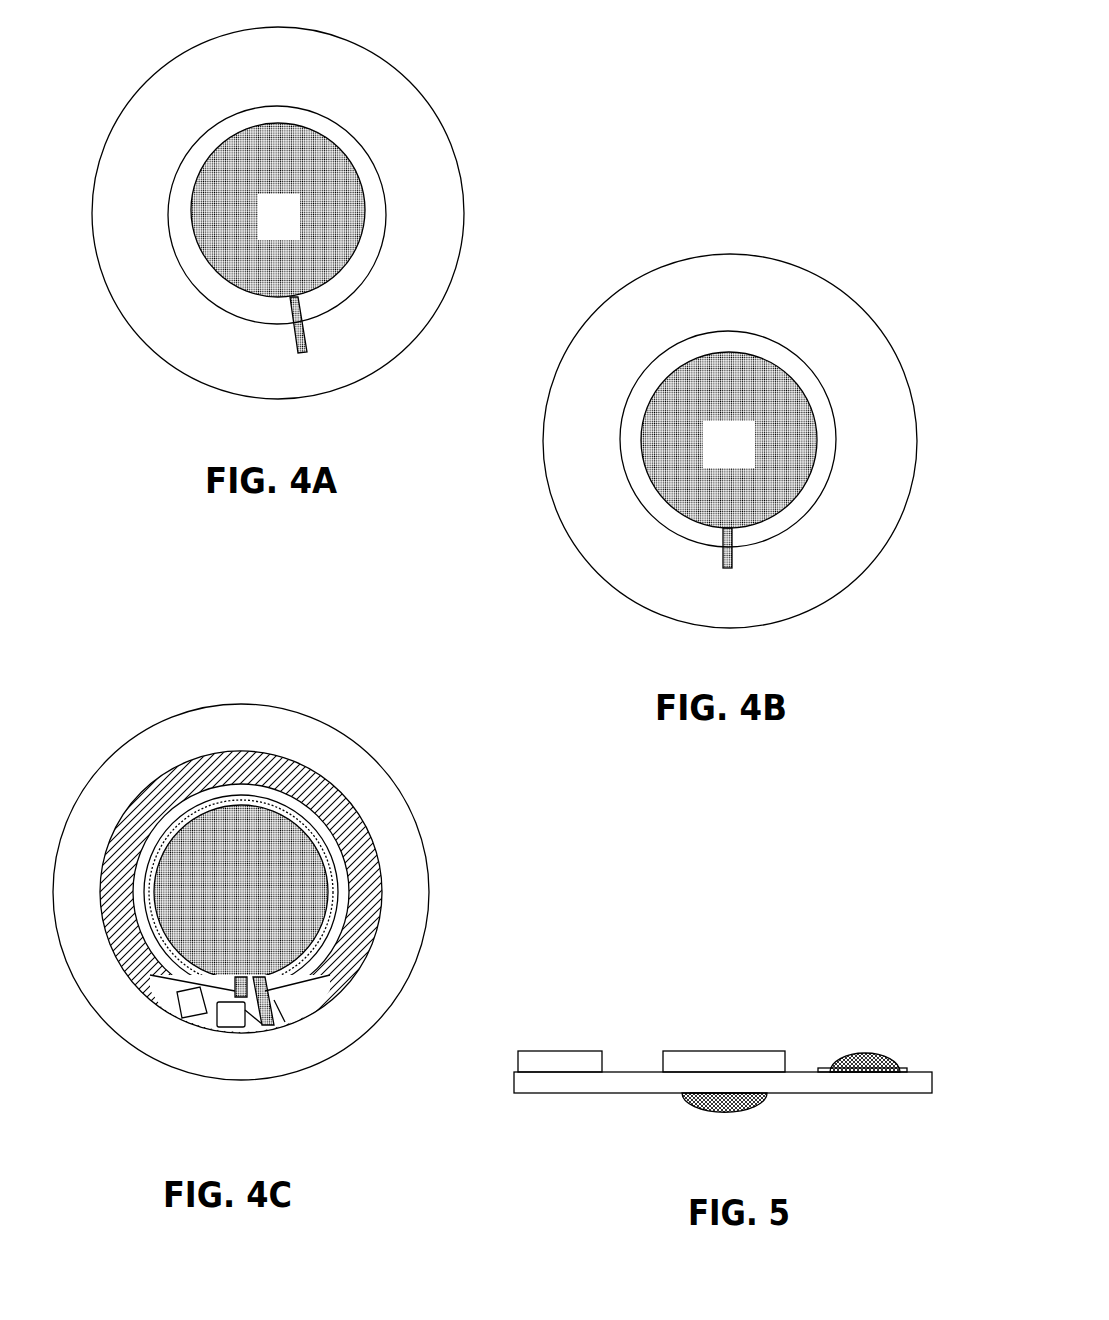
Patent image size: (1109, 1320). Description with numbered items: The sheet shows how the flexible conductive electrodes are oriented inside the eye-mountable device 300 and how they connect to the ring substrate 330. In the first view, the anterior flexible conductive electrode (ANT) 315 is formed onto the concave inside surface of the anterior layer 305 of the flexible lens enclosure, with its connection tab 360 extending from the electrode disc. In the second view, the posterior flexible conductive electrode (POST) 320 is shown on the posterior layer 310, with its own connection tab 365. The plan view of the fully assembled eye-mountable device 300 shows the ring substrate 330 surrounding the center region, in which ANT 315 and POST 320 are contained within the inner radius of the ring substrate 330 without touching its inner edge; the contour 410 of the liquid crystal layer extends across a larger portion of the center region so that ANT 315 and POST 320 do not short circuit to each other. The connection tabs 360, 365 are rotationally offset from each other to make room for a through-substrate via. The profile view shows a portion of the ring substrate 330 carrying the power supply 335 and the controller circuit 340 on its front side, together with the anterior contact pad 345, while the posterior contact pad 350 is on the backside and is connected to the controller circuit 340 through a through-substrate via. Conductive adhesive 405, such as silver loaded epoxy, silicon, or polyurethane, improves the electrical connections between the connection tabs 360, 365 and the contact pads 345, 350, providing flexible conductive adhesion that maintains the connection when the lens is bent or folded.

In FIG. 4C, the eye-mountable device 300 is at (140, 650).
In FIG. 4A, the anterior layer 305 is at (341, 47).
In FIG. 4B, the posterior layer 310 is at (612, 565).
In FIG. 4A, the anterior flexible conductive electrode 315 is at (264, 240).
In FIG. 4B, the posterior flexible conductive electrode 320 is at (714, 467).
In FIG. 4C, the ring substrate 330 is at (362, 847).
In FIG. 5, the ring substrate 330 is at (850, 1093).
In FIG. 4C, the power supply 335 is at (183, 1010).
In FIG. 5, the power supply 335 is at (560, 1051).
In FIG. 4C, the controller circuit 340 is at (231, 1022).
In FIG. 5, the controller circuit 340 is at (685, 1051).
In FIG. 4C, the anterior contact pad 345 is at (282, 1022).
In FIG. 5, the anterior contact pad 345 is at (820, 1070).
In FIG. 5, the posterior contact pad 350 is at (680, 1095).
In FIG. 4A, the connection tab 360 is at (306, 332).
In FIG. 4C, the connection tab 360 is at (233, 988).
In FIG. 4B, the connection tab 365 is at (733, 560).
In FIG. 4C, the connection tab 365 is at (272, 998).
In FIG. 5, the conductive adhesive 405 is at (876, 1056).
In FIG. 4C, the contour 410 is at (241, 797).